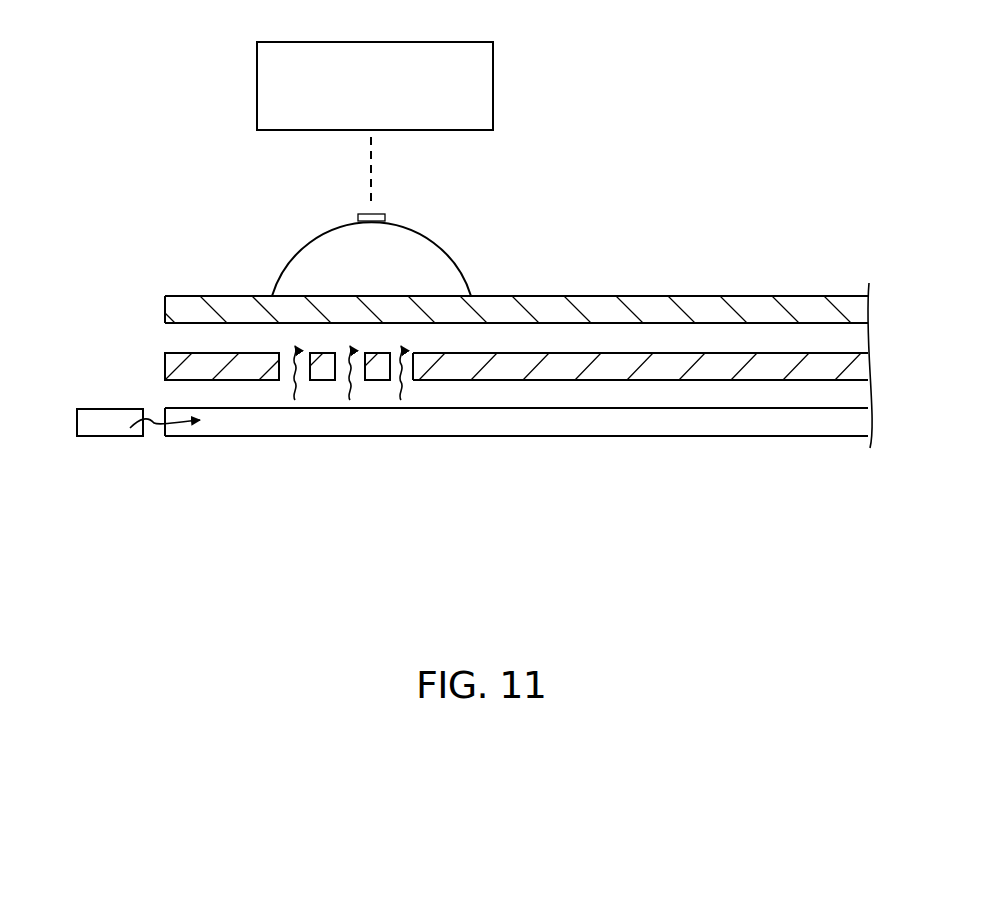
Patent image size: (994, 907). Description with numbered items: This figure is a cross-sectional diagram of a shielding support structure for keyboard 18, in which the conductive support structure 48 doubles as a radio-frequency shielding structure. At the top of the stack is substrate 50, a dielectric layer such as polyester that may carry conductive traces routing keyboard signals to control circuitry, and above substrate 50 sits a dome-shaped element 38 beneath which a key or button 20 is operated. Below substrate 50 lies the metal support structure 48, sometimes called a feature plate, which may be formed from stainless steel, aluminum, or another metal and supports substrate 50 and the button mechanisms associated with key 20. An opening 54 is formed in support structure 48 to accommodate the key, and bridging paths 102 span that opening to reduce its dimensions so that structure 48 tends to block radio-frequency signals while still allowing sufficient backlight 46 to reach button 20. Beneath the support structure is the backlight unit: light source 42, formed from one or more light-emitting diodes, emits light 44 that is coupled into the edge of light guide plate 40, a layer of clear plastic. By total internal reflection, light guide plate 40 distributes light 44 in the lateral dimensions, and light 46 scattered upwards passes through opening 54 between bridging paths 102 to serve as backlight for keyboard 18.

The keyboard 18 is at (778, 156).
The key 20 is at (488, 86).
The button member 38 is at (450, 248).
The light guide plate 40 is at (865, 424).
The light source 42 is at (83, 422).
The light 44 is at (152, 422).
The light 46 is at (291, 353).
The conductive support structure 48 is at (858, 369).
The substrate 50 is at (859, 312).
The opening 54 is at (283, 389).
The bridging paths 102 is at (322, 368).